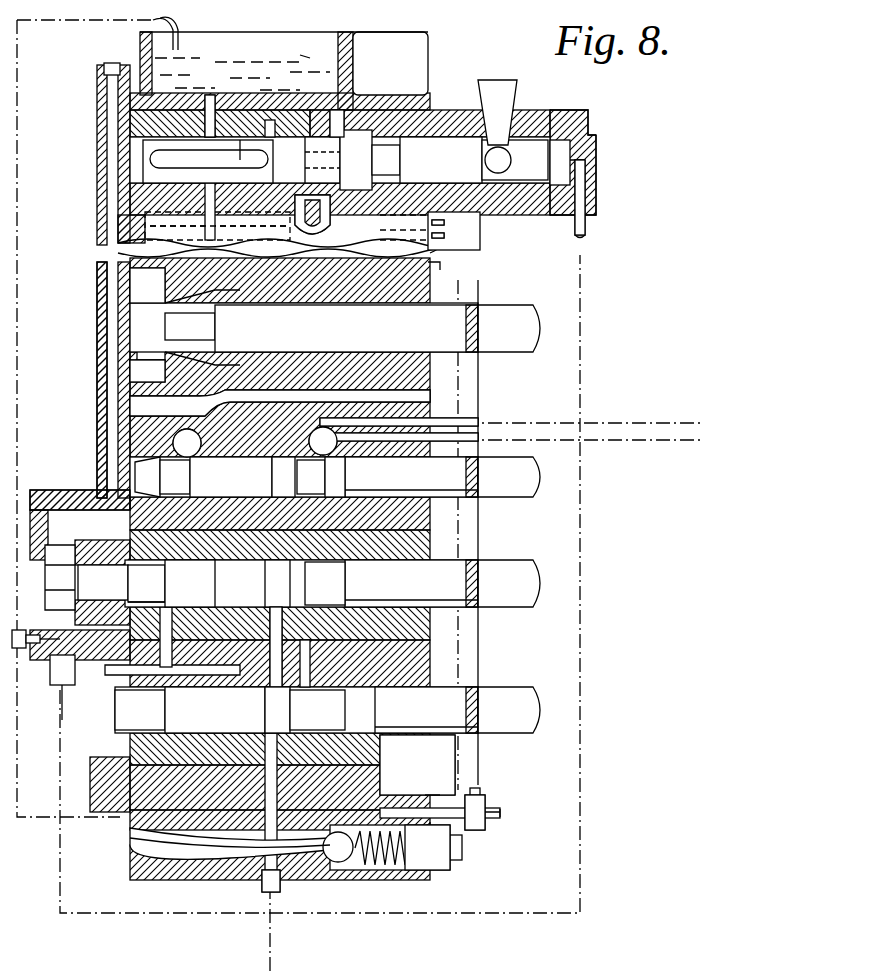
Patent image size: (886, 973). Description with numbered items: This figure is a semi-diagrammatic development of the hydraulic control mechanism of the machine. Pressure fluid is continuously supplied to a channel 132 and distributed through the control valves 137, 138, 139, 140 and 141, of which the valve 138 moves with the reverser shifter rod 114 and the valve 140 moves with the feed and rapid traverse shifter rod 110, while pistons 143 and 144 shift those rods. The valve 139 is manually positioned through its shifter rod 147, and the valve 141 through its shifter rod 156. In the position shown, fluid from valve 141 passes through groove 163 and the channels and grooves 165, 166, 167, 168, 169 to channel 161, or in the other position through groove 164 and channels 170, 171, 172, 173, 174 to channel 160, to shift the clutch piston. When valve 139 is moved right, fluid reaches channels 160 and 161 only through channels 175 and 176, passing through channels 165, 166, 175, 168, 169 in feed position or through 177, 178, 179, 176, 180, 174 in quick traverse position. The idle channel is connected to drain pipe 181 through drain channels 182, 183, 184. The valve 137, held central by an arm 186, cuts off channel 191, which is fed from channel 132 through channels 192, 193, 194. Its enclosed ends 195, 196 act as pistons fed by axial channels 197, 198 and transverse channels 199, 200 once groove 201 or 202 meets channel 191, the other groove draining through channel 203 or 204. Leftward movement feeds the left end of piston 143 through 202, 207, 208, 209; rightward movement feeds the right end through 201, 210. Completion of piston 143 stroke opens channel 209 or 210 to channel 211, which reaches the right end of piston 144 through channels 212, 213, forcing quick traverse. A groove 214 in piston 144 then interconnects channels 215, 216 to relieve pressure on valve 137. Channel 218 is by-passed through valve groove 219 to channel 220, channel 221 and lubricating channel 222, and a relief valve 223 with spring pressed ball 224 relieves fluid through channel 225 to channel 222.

The feed and rapid traverse shifter rod 110 is at (503, 583).
The reverser shifter rod 114 is at (503, 328).
The channel 132 is at (280, 892).
The valve 137 is at (420, 137).
The valve 138 is at (346, 328).
The valve 139 is at (411, 477).
The valve 140 is at (411, 583).
The valve 141 is at (426, 710).
The reverser piston 143 is at (188, 300).
The piston 144 is at (50, 540).
The shifter rod 147 is at (503, 477).
The shifter rod 156 is at (503, 710).
The channel 160 is at (455, 436).
The channel 161 is at (455, 420).
The annular valve groove 163 is at (205, 735).
The annular valve groove 164 is at (330, 735).
The channel or groove 165 is at (160, 620).
The channel or groove 166 is at (190, 583).
The channel or groove 167 is at (146, 580).
The channel or groove 168 is at (170, 495).
The channel or groove 169 is at (190, 455).
The channel or groove 170 is at (312, 690).
The channel or groove 171 is at (360, 602).
The channel or groove 172 is at (281, 583).
The channel or groove 173 is at (350, 492).
The channel or groove 174 is at (329, 462).
The channel 175 is at (230, 505).
The channel 176 is at (308, 477).
The channel or groove 177 is at (268, 690).
The channel or groove 178 is at (276, 620).
The channel or groove 179 is at (325, 583).
The channel or groove 180 is at (286, 477).
The drain pipe 181 is at (18, 650).
The drain channel 182 is at (50, 670).
The drain channel 183 is at (138, 740).
The drain channel 184 is at (430, 722).
The arm 186 is at (500, 105).
The fluid channel 191 is at (300, 216).
The channel 192 is at (450, 262).
The channel 193 is at (432, 795).
The channel 194 is at (400, 770).
The valve end 195 is at (143, 137).
The valve end 196 is at (570, 128).
The axial channel 197 is at (150, 158).
The axial channel 198 is at (597, 140).
The transverse channel 199 is at (242, 160).
The transverse channel 200 is at (336, 137).
The valve groove 201 is at (235, 140).
The valve groove 202 is at (325, 160).
The drain channel 203 is at (210, 95).
The drain channel 204 is at (335, 58).
The channel 207 is at (320, 205).
The channel 208 is at (210, 238).
The channel 209 is at (130, 272).
The channel 210 is at (208, 238).
The groove or channel 211 is at (130, 385).
The channel 212 is at (140, 405).
The channel 213 is at (118, 450).
The channel groove 214 is at (103, 582).
The channel 215 is at (60, 495).
The channel 216 is at (58, 635).
The channel 218 is at (444, 236).
The valve groove 219 is at (395, 185).
The channel 220 is at (444, 222).
The channel 221 is at (480, 800).
The channel 222 is at (488, 822).
The relief valve 223 is at (400, 870).
The spring pressed ball 224 is at (338, 862).
The channel 225 is at (305, 880).